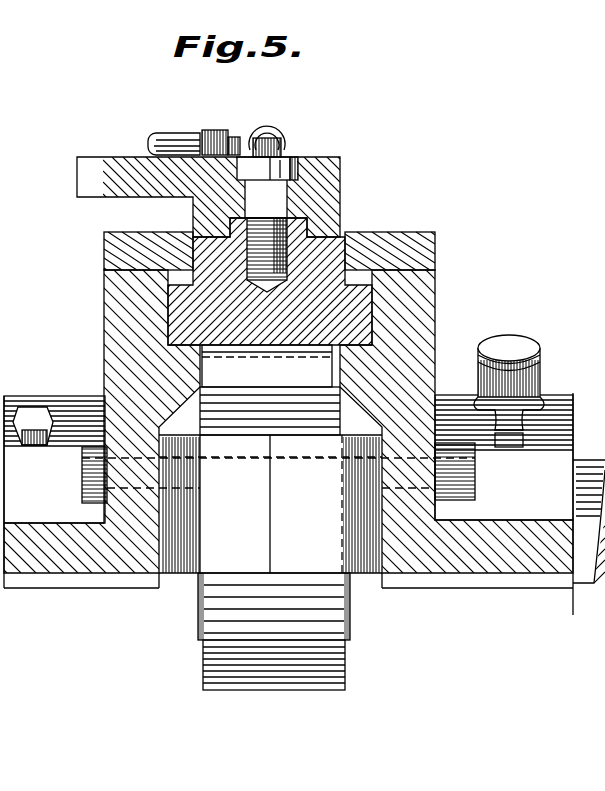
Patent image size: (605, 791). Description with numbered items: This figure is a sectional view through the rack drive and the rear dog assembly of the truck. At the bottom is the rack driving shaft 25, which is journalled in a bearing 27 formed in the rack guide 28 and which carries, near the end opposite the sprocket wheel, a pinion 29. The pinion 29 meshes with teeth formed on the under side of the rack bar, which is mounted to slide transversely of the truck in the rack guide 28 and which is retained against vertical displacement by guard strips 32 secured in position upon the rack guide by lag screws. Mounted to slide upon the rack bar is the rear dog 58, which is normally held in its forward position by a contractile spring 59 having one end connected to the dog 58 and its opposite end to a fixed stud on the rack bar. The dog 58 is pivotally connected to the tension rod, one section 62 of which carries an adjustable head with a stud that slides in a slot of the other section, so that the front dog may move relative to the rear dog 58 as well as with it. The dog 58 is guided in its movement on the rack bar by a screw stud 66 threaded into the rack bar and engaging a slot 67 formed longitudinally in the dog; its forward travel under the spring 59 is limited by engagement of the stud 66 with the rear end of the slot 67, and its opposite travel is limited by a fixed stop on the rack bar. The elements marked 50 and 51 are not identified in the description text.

The rack driving shaft 25 is at (588, 498).
The bearing 27 is at (48, 394).
The rack guide 28 is at (120, 313).
The pinion 29 is at (222, 644).
The guard strips 32 is at (120, 247).
The plate 50 is at (315, 368).
The body 51 is at (315, 272).
The rear dog 58 is at (332, 203).
The contractile spring 59 is at (272, 122).
The tension rod section 62 is at (168, 136).
The screw stud 66 is at (278, 173).
The slot 67 is at (300, 173).